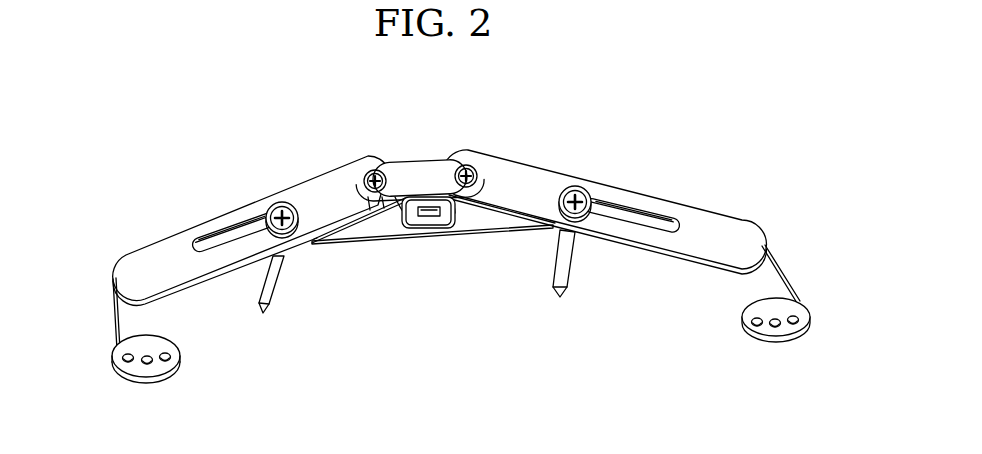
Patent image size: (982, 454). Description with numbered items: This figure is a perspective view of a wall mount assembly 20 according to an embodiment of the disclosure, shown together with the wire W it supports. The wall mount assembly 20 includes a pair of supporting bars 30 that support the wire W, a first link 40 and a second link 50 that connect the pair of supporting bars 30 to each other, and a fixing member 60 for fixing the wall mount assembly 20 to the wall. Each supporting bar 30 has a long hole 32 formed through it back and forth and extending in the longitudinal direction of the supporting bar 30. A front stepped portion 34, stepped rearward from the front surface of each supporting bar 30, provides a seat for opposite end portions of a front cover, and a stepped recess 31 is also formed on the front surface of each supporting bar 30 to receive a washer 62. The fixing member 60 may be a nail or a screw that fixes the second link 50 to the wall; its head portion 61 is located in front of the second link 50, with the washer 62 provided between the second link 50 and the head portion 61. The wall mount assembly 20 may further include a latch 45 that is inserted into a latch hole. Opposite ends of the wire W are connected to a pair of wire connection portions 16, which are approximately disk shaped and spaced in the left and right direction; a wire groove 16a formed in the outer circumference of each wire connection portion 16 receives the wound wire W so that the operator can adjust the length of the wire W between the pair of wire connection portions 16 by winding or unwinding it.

The wall mount assembly 20 is at (533, 151).
The supporting bar 30 is at (148, 253).
The stepped recess 31 is at (215, 232).
The long hole 32 is at (237, 231).
The front stepped portion 34 is at (374, 203).
The first link 40 is at (417, 157).
The latch 45 is at (430, 229).
The second link 50 is at (482, 230).
The fixing member 60 is at (282, 305).
The head portion 61 is at (289, 225).
The washer 62 is at (290, 204).
The wire W is at (113, 313).
The wire connection portion 16 is at (114, 358).
The wire groove 16a is at (152, 384).